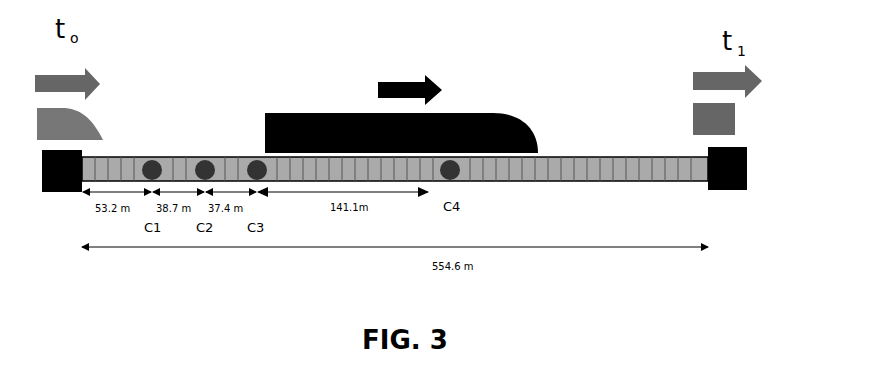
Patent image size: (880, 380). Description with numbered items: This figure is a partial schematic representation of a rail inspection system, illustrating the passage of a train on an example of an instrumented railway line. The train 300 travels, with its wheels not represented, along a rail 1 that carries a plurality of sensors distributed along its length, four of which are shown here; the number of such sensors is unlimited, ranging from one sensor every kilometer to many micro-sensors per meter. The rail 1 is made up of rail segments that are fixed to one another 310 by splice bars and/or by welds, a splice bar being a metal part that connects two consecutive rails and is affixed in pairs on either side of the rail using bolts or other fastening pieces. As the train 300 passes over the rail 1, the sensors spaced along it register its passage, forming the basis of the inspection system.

The rail 1 is at (646, 157).
The train 300 is at (481, 98).
The rail segment fixing 310 is at (65, 192).